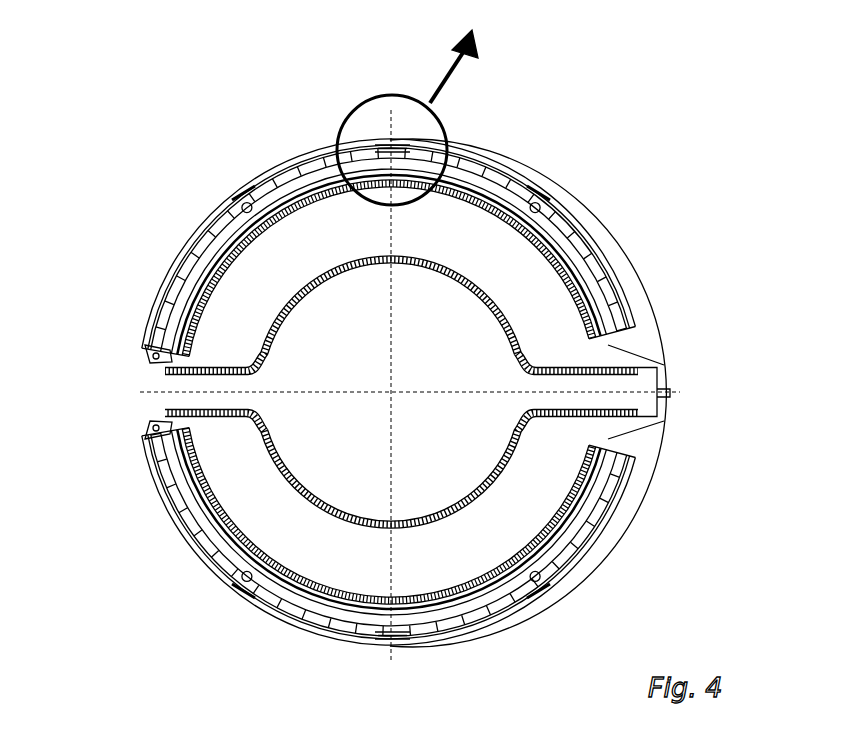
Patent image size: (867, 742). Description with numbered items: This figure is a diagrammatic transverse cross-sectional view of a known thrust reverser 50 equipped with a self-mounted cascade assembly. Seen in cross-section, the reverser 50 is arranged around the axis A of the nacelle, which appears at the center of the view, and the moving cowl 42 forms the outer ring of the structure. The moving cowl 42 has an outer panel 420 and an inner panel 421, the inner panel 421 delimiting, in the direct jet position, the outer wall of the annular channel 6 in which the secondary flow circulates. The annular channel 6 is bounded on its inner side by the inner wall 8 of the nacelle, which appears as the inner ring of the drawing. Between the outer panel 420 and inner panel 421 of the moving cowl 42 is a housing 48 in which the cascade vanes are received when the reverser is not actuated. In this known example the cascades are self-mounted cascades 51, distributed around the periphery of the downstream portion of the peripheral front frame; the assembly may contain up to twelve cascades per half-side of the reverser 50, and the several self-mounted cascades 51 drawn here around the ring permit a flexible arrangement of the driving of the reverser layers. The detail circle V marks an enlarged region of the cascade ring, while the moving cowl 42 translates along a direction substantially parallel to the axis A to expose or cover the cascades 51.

The thrust reverser 50 is at (650, 158).
The moving cowl 42 is at (646, 268).
The outer panel 420 is at (656, 302).
The inner panel 421 is at (600, 258).
The housing 48 is at (545, 190).
The self-mounted cascade 51 is at (290, 165).
The annular channel 6 is at (331, 244).
The inner wall 8 is at (292, 318).
The axis A is at (386, 391).
The detail view V is at (358, 100).